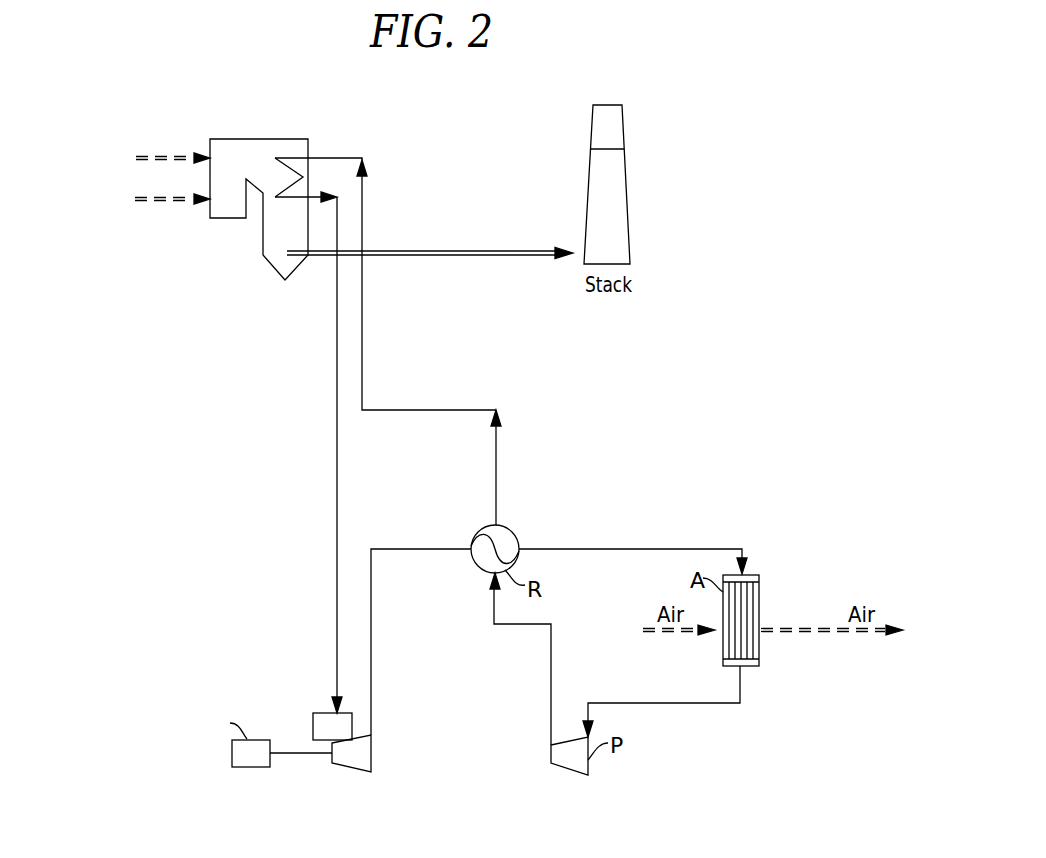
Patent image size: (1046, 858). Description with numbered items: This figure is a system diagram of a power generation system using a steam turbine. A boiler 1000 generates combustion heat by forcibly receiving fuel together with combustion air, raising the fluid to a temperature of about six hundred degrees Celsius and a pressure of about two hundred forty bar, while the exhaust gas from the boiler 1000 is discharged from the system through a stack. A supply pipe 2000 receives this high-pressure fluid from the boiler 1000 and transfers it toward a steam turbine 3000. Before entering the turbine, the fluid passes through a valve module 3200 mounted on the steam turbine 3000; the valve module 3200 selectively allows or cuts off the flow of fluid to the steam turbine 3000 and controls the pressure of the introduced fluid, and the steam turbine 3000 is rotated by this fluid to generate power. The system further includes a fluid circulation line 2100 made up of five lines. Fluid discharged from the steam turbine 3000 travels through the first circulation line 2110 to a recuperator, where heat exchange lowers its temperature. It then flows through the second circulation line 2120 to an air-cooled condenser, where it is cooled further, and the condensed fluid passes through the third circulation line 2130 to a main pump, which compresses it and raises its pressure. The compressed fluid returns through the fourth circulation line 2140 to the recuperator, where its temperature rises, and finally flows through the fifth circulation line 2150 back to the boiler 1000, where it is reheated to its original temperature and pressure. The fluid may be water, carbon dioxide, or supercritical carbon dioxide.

The boiler 1000 is at (262, 139).
The supply pipe 2000 is at (336, 487).
The fluid circulation line 2100 is at (583, 404).
The first circulation line 2110 is at (372, 642).
The second circulation line 2120 is at (620, 548).
The third circulation line 2130 is at (672, 706).
The fourth circulation line 2140 is at (550, 685).
The fifth circulation line 2150 is at (497, 480).
The steam turbine 3000 is at (371, 753).
The valve module 3200 is at (325, 712).